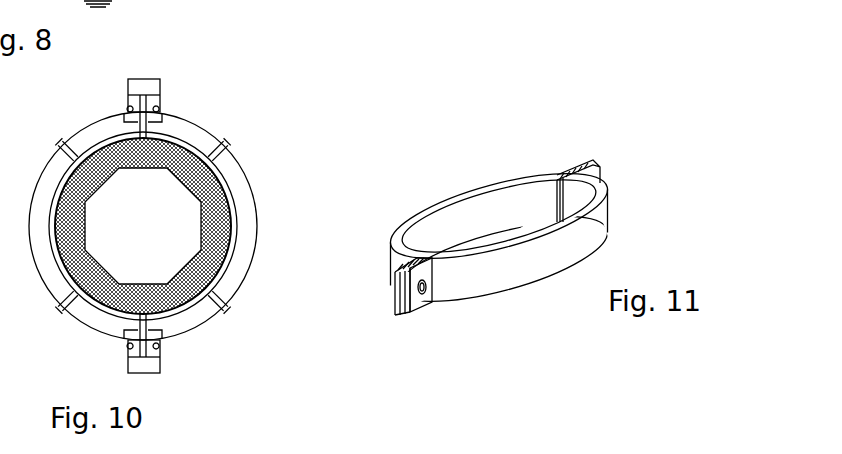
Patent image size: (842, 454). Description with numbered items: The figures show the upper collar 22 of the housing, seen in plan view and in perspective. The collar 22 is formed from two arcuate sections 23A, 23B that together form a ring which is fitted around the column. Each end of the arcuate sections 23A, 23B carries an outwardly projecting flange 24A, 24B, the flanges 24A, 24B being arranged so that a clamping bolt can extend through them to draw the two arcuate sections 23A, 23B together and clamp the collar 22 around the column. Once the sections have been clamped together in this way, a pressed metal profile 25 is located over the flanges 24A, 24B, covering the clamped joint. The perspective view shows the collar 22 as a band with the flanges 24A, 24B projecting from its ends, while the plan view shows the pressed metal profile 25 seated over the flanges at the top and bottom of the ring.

In FIG. 10, the pressed metal profile 25 is at (143, 80).
In FIG. 11, the upper collar 22 is at (515, 209).
In FIG. 11, the arcuate section 23A is at (523, 183).
In FIG. 11, the arcuate section 23B is at (500, 272).
In FIG. 11, the outwardly projecting flange 24A is at (597, 163).
In FIG. 11, the outwardly projecting flange 24B is at (420, 303).